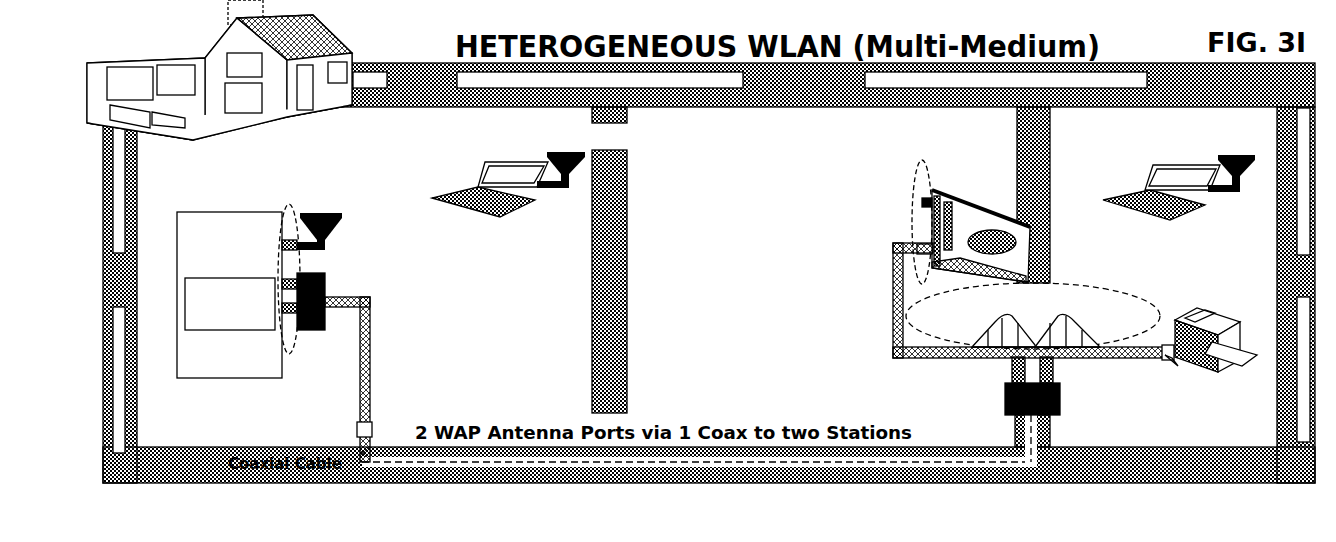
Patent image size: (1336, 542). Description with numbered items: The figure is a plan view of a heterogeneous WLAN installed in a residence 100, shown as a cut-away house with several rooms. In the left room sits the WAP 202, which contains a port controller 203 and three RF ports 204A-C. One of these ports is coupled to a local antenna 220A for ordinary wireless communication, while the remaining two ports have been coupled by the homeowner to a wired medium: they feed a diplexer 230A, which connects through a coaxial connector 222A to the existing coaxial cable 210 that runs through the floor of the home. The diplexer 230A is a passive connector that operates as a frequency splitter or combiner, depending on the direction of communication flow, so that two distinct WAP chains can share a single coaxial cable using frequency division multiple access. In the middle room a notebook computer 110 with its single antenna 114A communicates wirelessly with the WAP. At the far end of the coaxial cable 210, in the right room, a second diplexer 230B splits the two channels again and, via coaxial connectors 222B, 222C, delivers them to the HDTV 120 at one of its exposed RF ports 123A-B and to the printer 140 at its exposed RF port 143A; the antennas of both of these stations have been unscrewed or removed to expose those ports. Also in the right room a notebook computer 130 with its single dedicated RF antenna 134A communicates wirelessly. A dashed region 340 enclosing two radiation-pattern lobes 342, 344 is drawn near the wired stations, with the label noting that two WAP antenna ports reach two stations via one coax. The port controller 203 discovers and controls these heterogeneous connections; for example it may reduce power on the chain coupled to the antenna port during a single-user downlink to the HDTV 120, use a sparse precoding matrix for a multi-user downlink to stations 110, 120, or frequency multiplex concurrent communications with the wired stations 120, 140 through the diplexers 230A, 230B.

The residence 100 is at (206, 52).
The WAP 202 is at (246, 212).
The port controller 203 is at (236, 332).
The RF ports 204A-C is at (289, 206).
The local antenna 220A is at (337, 222).
The diplexer 230A is at (328, 282).
The coaxial connector 222A is at (372, 353).
The coaxial cable 210 is at (358, 443).
The notebook computer 110 is at (482, 177).
The single antenna 114A is at (582, 154).
The HDTV 120 is at (976, 208).
The RF ports 123A-B is at (918, 178).
The coaxial connector 222B is at (906, 251).
The dual-antenna region 340 is at (1100, 286).
The first antenna radiation pattern 342 is at (982, 323).
The second antenna radiation pattern 344 is at (1088, 323).
The notebook computer 130 is at (1152, 176).
The single dedicated RF antenna 134A is at (1237, 156).
The printer 140 is at (1216, 322).
The coaxial connector 222C is at (1163, 359).
The RF port 143A is at (1173, 369).
The diplexer 230B is at (1005, 403).